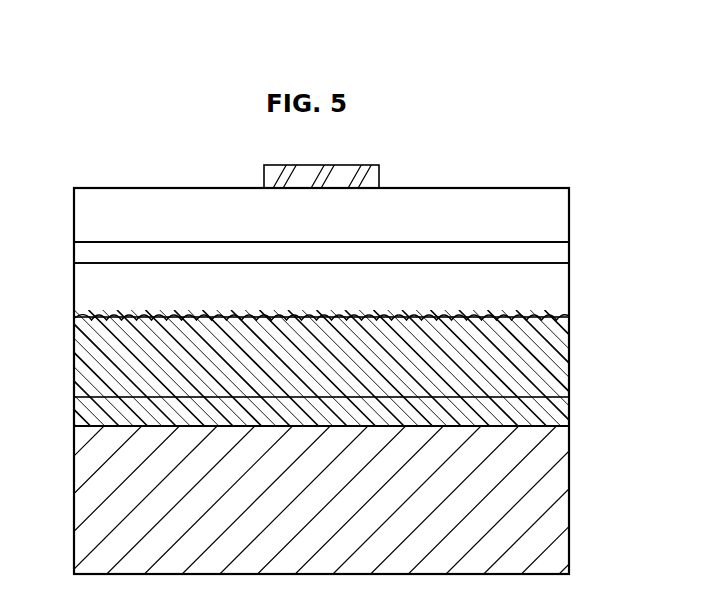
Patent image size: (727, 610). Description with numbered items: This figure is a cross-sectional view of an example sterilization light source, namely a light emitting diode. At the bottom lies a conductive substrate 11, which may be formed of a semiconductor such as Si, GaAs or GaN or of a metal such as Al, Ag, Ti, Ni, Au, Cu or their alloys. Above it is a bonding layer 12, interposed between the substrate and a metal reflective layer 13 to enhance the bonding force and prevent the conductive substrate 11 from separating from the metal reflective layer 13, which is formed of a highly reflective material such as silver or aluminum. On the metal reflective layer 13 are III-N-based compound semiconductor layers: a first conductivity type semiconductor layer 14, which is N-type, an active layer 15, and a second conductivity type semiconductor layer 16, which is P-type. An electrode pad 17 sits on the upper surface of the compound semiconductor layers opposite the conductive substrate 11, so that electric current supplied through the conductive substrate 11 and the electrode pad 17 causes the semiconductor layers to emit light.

The conductive substrate 11 is at (557, 503).
The bonding layer 12 is at (557, 412).
The metal reflective layer 13 is at (557, 356).
The first conductivity type semiconductor layer 14 is at (559, 292).
The active layer 15 is at (558, 252).
The second conductivity type semiconductor layer 16 is at (559, 213).
The electrode pad 17 is at (375, 178).